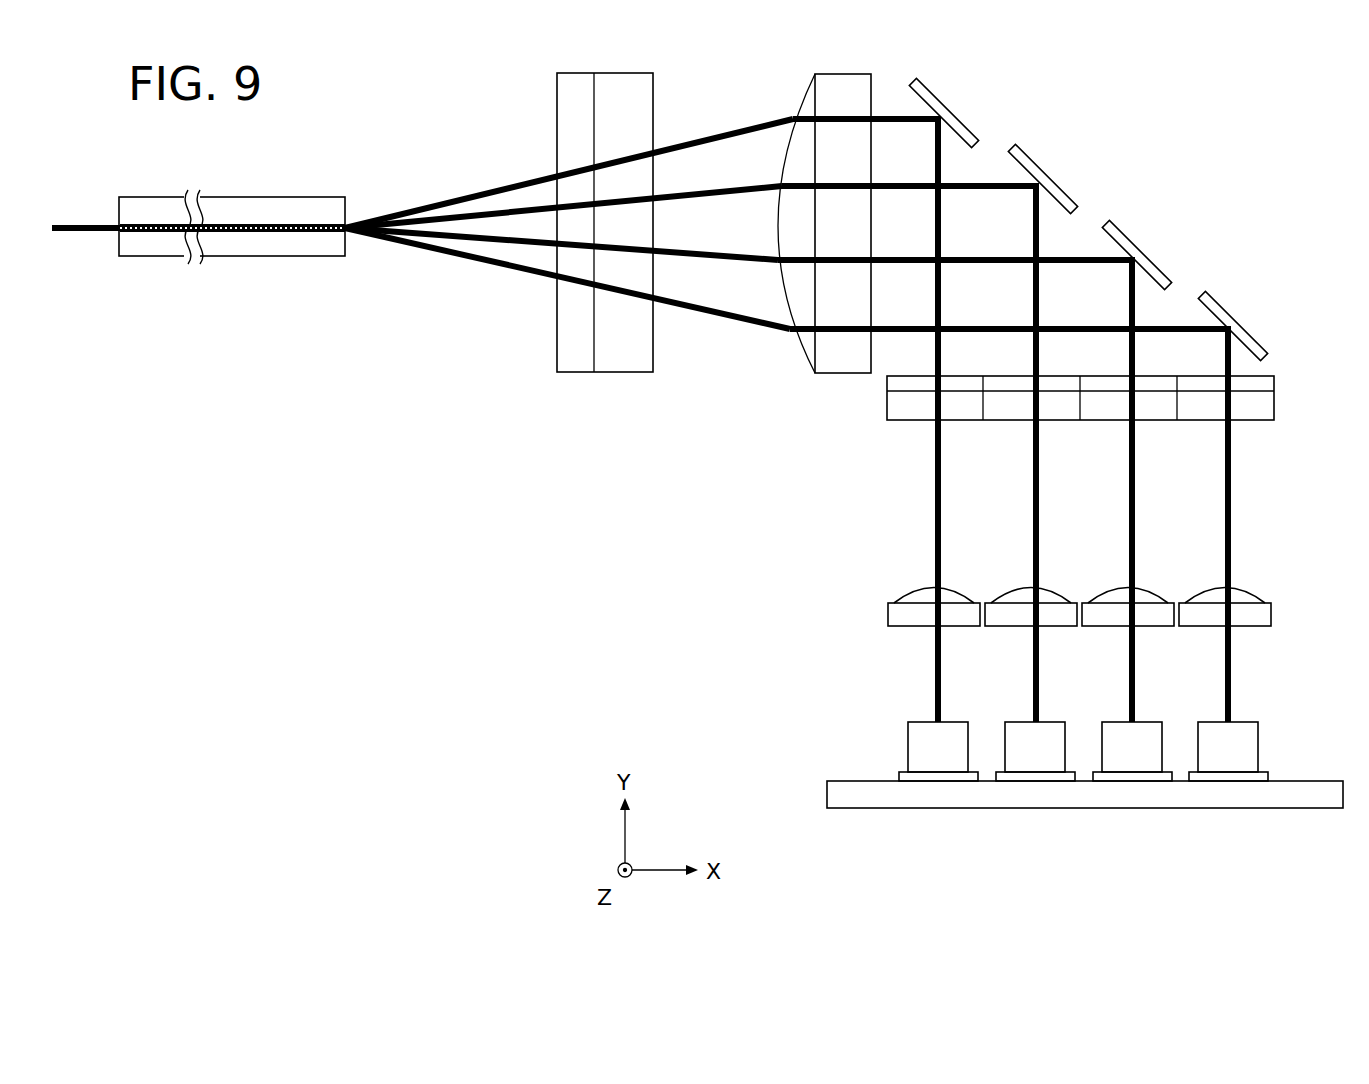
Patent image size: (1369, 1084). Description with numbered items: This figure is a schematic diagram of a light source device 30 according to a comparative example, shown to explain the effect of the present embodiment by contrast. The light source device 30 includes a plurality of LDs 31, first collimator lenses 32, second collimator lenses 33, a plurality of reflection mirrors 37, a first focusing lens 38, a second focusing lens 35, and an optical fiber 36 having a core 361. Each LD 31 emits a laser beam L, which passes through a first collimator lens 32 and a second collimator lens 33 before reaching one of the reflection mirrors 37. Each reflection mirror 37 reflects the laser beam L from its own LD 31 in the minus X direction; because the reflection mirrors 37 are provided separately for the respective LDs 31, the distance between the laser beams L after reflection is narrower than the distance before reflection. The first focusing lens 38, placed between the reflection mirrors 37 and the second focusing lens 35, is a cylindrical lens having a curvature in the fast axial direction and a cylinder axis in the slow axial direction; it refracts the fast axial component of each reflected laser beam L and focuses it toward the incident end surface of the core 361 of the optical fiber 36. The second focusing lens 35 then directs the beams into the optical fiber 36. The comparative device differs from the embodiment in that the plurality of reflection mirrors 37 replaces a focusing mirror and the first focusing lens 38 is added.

The laser beam L is at (80, 225).
The optical fiber 36 is at (298, 197).
The core of optical fiber 361 is at (303, 232).
The second focusing lens 35 is at (568, 374).
The first focusing lens 38 is at (840, 374).
The reflection mirrors 37 is at (1204, 290).
The second collimator lenses 33 is at (1013, 421).
The first collimator lenses 32 is at (1005, 590).
The LDs 31 is at (1227, 757).
The light source device 30 is at (665, 562).